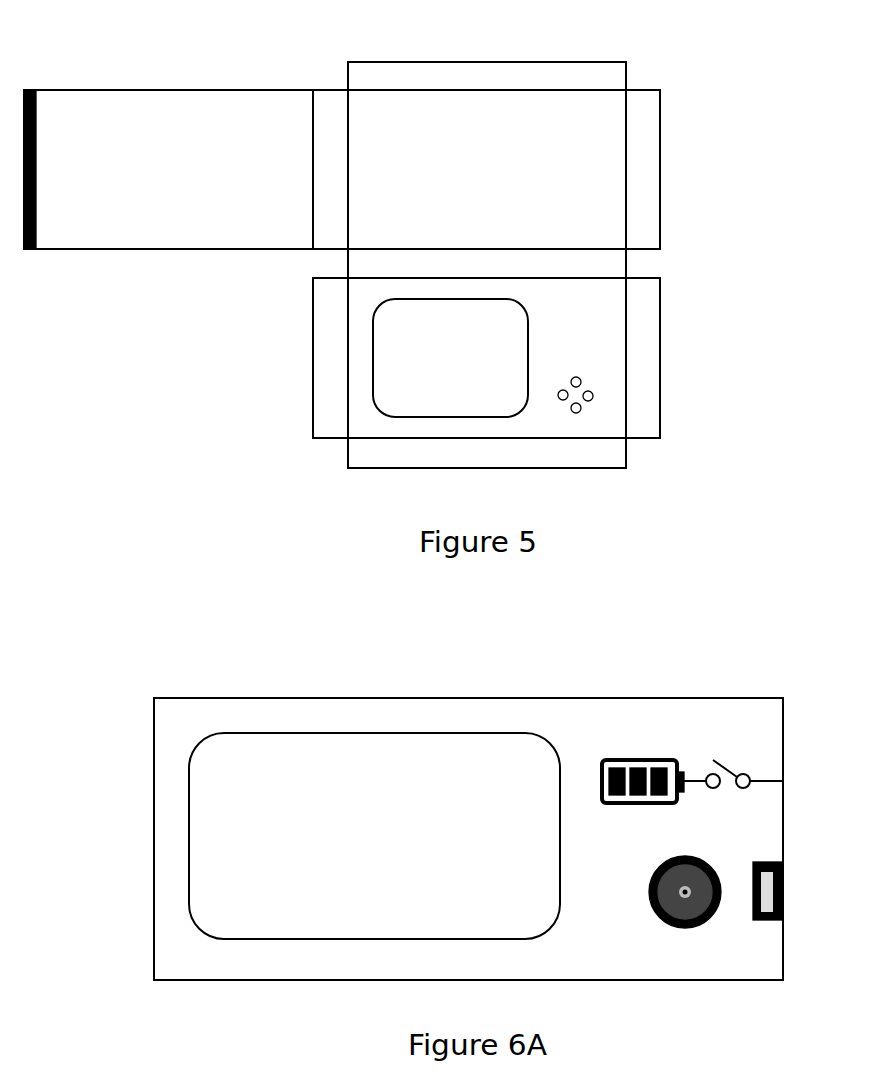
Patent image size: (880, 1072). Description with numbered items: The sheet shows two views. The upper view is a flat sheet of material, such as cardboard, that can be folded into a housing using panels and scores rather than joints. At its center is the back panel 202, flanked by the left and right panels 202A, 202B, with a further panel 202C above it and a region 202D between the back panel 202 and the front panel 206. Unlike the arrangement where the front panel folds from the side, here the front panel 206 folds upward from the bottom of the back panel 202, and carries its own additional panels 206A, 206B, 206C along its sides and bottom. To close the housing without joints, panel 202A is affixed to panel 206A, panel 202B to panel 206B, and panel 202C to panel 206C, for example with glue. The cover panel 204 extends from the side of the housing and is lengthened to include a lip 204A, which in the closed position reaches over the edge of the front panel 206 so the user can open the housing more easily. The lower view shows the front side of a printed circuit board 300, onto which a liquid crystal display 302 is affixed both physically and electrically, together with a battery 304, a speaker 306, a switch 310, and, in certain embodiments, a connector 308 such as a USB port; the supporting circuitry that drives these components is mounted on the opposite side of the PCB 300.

In FIG. 5, the back panel 202 is at (572, 140).
In FIG. 5, the left panel 202A is at (328, 233).
In FIG. 5, the right panel 202B is at (640, 167).
In FIG. 5, the panel 202C is at (427, 80).
In FIG. 5, the hinge region of case 202D is at (390, 257).
In FIG. 5, the cover panel 204 is at (228, 142).
In FIG. 5, the lip 204A is at (37, 140).
In FIG. 5, the front panel 206 is at (580, 328).
In FIG. 5, the panel 206A is at (330, 392).
In FIG. 5, the panel 206B is at (643, 360).
In FIG. 5, the panel 206C is at (427, 452).
In FIG. 6A, the printed circuit board 300 is at (310, 980).
In FIG. 6A, the display 302 is at (374, 836).
In FIG. 6A, the battery 304 is at (650, 758).
In FIG. 6A, the speaker 306 is at (708, 923).
In FIG. 6A, the connector 308 is at (786, 892).
In FIG. 6A, the switch 310 is at (773, 781).